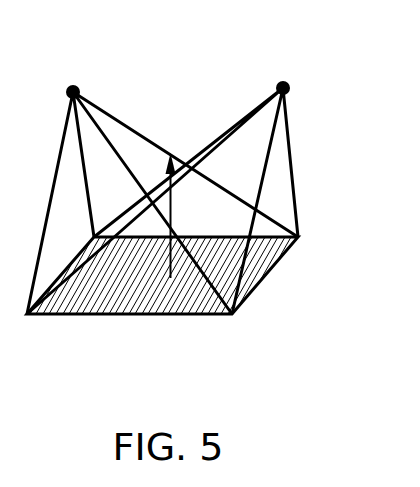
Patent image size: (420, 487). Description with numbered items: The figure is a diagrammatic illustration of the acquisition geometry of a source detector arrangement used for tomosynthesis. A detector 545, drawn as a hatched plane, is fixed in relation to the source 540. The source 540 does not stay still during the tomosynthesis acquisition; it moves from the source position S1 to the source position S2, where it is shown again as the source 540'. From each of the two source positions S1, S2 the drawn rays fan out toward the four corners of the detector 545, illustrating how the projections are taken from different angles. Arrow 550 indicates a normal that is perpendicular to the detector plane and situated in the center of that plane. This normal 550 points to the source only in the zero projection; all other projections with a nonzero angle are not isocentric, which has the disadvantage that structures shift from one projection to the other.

The source position S1 is at (283, 83).
The source position S2 is at (68, 88).
The source 540 is at (310, 59).
The source 540' is at (70, 64).
The detector 545 is at (135, 314).
The normal 550 is at (170, 153).